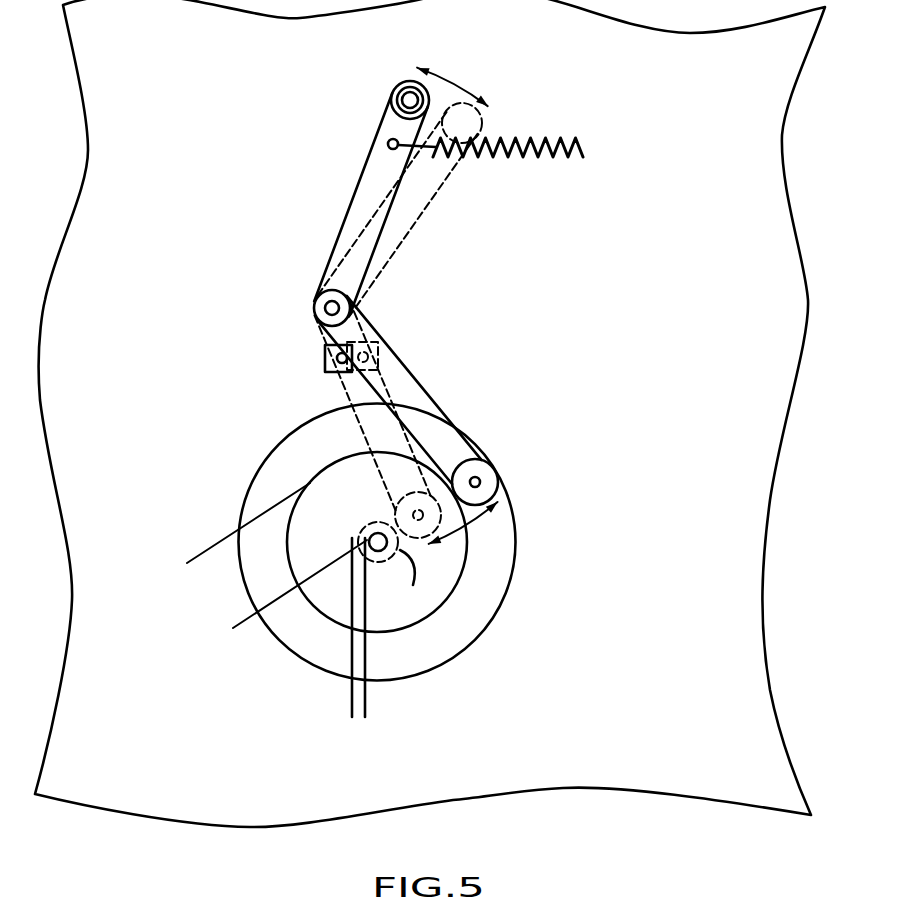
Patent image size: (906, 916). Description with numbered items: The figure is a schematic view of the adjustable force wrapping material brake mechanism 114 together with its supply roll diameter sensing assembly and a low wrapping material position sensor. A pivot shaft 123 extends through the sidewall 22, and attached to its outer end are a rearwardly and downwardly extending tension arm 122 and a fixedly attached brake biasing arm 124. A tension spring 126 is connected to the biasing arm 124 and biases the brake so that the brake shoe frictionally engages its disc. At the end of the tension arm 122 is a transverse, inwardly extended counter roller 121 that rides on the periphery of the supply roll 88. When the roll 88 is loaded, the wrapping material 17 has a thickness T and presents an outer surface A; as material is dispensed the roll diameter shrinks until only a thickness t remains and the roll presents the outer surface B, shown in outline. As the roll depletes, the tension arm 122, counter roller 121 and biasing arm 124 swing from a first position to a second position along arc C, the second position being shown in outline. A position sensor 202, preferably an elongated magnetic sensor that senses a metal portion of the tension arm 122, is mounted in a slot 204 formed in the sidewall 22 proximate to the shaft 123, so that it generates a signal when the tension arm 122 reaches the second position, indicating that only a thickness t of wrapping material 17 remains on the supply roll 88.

The sidewall 22 is at (168, 73).
The brake biasing arm 124 is at (350, 200).
The tension spring 126 is at (560, 150).
The pivot shaft 123 is at (350, 300).
The brake mechanism 114 is at (524, 305).
The position sensor 202 is at (325, 346).
The slot 204 is at (324, 360).
The tension arm 122 is at (422, 378).
The counter roller 121 is at (487, 470).
The supply roll 88 is at (553, 624).
The wrapping material 17 is at (330, 623).
The outer surface A is at (450, 600).
The outer surface B is at (408, 584).
The arc C is at (455, 75).
The thickness T is at (187, 566).
The thickness t is at (358, 717).